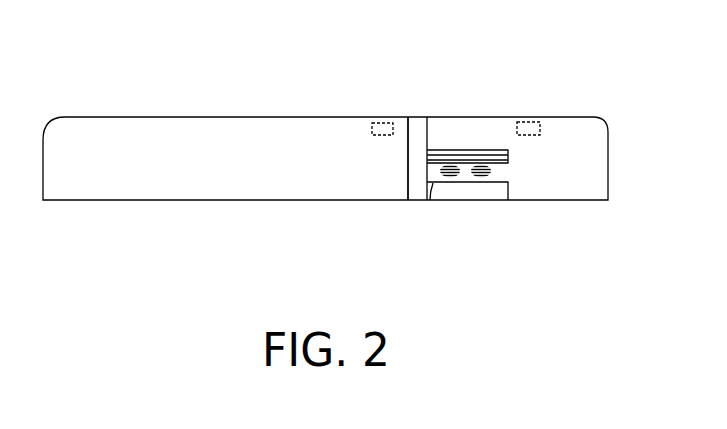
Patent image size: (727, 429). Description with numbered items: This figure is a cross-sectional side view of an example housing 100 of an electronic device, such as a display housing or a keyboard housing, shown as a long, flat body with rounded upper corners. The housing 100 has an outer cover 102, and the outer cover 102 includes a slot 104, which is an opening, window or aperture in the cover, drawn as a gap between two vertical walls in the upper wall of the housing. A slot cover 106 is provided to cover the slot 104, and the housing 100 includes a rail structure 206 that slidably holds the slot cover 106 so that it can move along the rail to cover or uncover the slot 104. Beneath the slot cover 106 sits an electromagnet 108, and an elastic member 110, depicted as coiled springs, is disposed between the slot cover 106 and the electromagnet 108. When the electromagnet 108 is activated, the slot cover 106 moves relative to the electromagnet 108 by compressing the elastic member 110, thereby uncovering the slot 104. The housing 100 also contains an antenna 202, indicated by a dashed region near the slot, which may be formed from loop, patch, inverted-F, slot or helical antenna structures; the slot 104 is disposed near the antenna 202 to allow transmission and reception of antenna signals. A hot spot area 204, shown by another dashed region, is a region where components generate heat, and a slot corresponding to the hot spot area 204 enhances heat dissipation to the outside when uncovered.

The housing 100 is at (448, 240).
The outer cover 102 is at (577, 117).
The slot 104 is at (438, 117).
The slot cover 106 is at (466, 150).
The electromagnet 108 is at (508, 186).
The elastic member 110 is at (430, 200).
The antenna 202 is at (532, 119).
The hot spot area 204 is at (387, 120).
The rail structure 206 is at (409, 190).